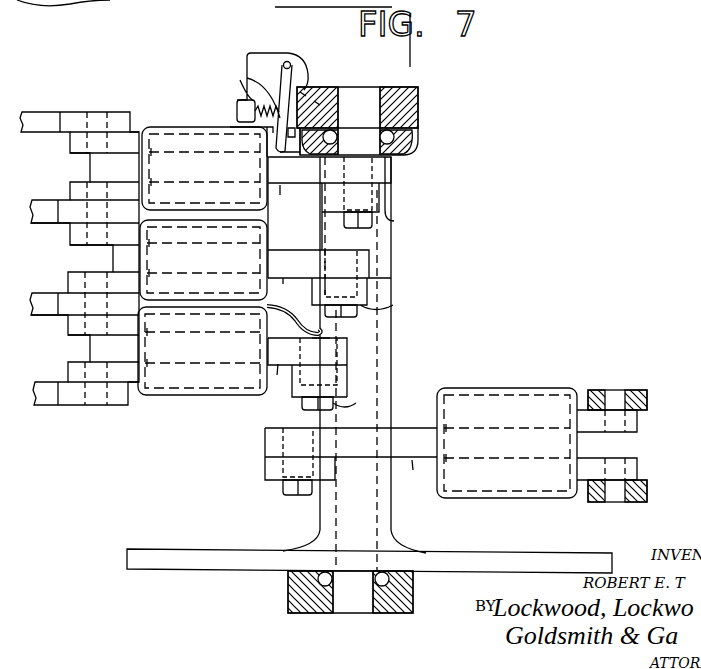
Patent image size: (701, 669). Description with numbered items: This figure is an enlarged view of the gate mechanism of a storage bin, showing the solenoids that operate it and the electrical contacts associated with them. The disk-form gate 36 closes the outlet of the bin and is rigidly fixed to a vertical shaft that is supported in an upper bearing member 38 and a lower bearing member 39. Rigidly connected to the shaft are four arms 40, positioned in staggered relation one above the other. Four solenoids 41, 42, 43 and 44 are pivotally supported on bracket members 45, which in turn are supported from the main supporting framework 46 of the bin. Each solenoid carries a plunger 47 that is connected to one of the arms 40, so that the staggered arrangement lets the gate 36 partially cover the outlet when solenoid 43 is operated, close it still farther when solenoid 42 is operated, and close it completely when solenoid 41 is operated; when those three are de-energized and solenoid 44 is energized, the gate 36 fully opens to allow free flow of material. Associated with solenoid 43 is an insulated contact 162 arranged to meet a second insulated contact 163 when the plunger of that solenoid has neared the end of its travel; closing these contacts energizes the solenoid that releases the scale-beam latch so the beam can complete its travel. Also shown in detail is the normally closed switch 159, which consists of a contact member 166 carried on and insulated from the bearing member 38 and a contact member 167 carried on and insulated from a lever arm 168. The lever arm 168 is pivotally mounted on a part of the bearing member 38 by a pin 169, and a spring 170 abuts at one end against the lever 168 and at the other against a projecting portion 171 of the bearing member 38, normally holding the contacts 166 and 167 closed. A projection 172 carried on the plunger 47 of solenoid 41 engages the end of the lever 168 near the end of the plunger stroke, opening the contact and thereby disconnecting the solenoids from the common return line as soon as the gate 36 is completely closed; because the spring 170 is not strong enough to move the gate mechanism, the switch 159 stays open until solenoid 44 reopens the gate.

The gate 36 is at (494, 557).
The bearing member 38 is at (420, 103).
The bearing member 39 is at (392, 615).
The arms 40 is at (394, 221).
The solenoid 41 is at (204, 168).
The solenoid 42 is at (203, 260).
The solenoid 43 is at (202, 351).
The solenoid 44 is at (507, 443).
The bracket members 45 is at (33, 128).
The main supporting framework 46 is at (56, 3).
The plunger 47 is at (349, 338).
The normally closed switch 159 is at (247, 90).
The contact 162 is at (302, 328).
The second contact 163 is at (318, 335).
The contact member 166 is at (318, 103).
The contact member 167 is at (306, 95).
The lever arm 168 is at (272, 54).
The pin 169 is at (292, 58).
The spring 170 is at (247, 77).
The projecting portion 171 is at (235, 110).
The projection 172 is at (299, 157).